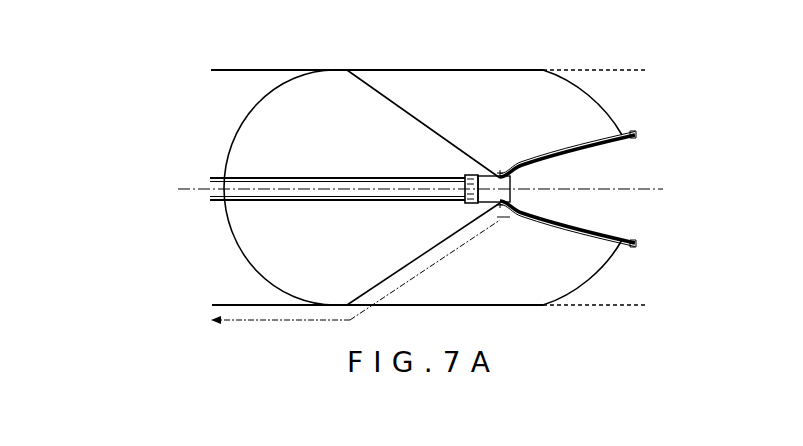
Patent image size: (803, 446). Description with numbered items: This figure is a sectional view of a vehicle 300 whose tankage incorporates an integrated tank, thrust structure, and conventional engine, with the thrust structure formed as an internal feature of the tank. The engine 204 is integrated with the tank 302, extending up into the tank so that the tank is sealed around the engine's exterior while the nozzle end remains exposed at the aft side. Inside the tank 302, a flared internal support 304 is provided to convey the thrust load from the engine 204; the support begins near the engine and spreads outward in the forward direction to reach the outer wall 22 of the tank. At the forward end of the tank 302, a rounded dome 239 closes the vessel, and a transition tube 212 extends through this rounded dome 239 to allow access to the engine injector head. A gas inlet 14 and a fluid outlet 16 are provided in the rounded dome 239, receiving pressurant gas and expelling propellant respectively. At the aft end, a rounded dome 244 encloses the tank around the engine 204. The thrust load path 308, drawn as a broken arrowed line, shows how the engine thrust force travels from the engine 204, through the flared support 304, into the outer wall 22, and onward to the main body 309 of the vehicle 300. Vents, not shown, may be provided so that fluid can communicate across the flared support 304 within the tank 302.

The vehicle 300 is at (136, 84).
The main body 309 is at (236, 70).
The outer wall 22 is at (428, 155).
The rounded dome 244 is at (600, 107).
The rounded dome 239 is at (250, 114).
The flared internal support 304 is at (426, 126).
The engine 204 is at (557, 150).
The gas inlet 14 is at (208, 178).
The transition tube 212 is at (329, 184).
The fluid outlet 16 is at (208, 199).
The tank 302 is at (277, 258).
The thrust load path 308 is at (428, 264).